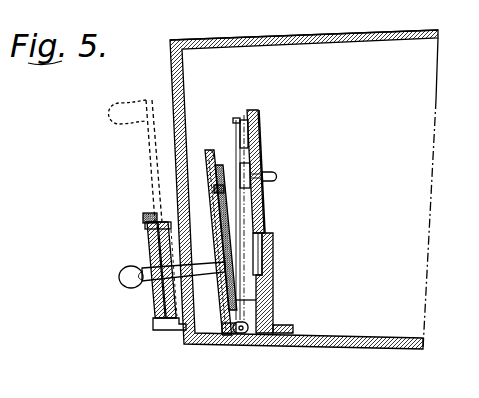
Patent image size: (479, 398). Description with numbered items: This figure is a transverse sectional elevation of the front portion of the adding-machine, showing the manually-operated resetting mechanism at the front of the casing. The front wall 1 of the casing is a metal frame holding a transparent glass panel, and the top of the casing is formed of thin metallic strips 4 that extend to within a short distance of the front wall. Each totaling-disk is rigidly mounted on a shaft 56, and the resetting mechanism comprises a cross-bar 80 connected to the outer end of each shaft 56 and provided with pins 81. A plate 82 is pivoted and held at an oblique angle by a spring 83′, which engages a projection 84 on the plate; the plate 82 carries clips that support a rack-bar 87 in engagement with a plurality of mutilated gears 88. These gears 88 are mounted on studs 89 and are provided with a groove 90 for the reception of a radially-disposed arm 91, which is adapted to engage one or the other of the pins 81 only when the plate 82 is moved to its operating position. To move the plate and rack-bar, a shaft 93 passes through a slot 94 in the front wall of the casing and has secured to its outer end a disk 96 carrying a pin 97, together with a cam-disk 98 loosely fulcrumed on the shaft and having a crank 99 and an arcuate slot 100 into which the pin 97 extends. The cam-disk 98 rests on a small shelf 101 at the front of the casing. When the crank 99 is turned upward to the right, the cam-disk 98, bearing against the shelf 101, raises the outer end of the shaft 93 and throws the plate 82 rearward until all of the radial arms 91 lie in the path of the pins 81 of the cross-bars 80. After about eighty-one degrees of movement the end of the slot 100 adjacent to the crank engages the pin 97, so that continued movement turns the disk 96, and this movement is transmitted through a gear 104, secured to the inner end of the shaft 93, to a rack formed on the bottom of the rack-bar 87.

The front wall 1 is at (174, 65).
The thin metallic strips 4 is at (279, 39).
The shaft 56 is at (268, 175).
The cross-bar 80 is at (252, 166).
The pins 81 is at (258, 140).
The plate 82 is at (234, 292).
The spring 83′ is at (222, 330).
The projection 84 is at (216, 334).
The rack-bar 87 is at (220, 216).
The mutilated gears 88 is at (240, 165).
The studs 89 is at (216, 178).
The groove 90 is at (221, 178).
The radially-disposed arm 91 is at (211, 160).
The shaft 93 is at (216, 272).
The slot 94 is at (160, 263).
The disk 96 is at (158, 200).
The pin 97 is at (145, 217).
The cam-disk 98 is at (150, 241).
The crank 99 is at (150, 149).
The arcuate slot 100 is at (147, 226).
The shelf 101 is at (160, 323).
The gear 104 is at (273, 300).